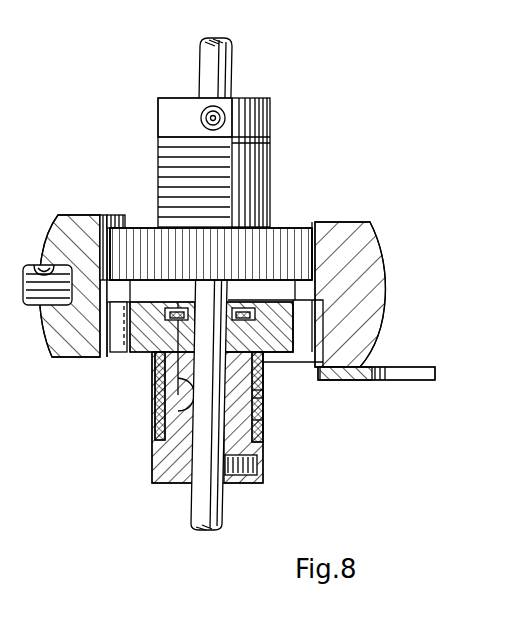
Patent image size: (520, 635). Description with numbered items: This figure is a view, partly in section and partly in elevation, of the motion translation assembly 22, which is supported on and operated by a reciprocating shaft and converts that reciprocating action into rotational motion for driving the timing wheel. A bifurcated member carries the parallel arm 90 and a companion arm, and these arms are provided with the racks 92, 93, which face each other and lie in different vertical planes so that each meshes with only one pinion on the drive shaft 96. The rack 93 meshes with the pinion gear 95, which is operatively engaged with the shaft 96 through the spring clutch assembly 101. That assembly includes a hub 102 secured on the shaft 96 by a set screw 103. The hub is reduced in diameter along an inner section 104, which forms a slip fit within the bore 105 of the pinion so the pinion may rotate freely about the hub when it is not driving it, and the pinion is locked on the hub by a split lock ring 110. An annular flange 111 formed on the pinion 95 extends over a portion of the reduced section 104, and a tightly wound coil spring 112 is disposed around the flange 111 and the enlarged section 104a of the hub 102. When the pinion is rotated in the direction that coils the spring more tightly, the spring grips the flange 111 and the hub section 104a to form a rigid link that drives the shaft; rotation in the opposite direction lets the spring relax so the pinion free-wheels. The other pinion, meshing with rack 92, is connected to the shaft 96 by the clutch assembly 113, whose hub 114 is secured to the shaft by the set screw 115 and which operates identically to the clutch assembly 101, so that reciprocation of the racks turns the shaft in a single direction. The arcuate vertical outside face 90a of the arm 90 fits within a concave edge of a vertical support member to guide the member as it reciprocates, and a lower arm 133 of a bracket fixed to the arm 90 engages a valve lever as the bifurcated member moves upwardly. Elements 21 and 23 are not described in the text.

The motion translation assembly 22 is at (100, 146).
The locking element 21 is at (37, 281).
The recess 23 is at (44, 266).
The arm 90 is at (350, 222).
The arcuate vertical outside face 90a is at (384, 258).
The rack 92 is at (295, 225).
The rack 93 is at (110, 357).
The pinion gear 95 is at (133, 352).
The drive shaft 96 is at (226, 512).
The spring clutch assembly 101 is at (278, 415).
The hub 102 is at (168, 463).
The set screw 103 is at (262, 468).
The reduced inner section 104 is at (264, 374).
The enlarged section 104a is at (160, 425).
The bore 105 is at (168, 402).
The split lock ring 110 is at (246, 312).
The annular flange 111 is at (265, 395).
The coil spring 112 is at (265, 437).
The clutch assembly 113 is at (281, 160).
The hub 114 is at (161, 104).
The set screw 115 is at (205, 110).
The lower arm 133 is at (425, 367).